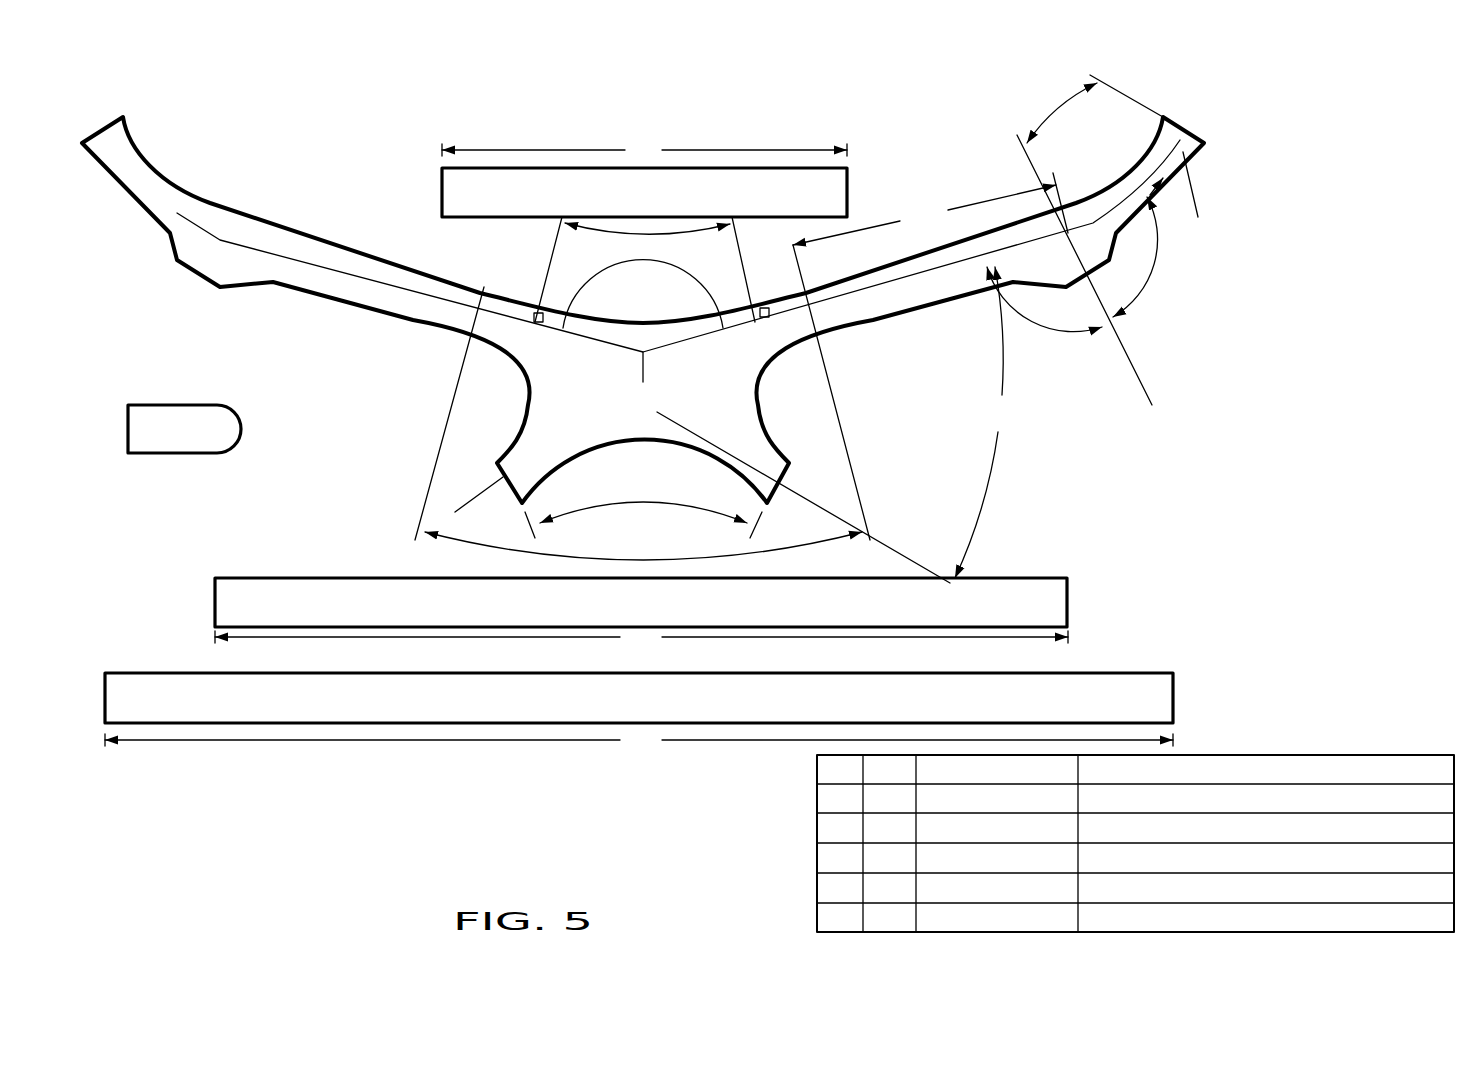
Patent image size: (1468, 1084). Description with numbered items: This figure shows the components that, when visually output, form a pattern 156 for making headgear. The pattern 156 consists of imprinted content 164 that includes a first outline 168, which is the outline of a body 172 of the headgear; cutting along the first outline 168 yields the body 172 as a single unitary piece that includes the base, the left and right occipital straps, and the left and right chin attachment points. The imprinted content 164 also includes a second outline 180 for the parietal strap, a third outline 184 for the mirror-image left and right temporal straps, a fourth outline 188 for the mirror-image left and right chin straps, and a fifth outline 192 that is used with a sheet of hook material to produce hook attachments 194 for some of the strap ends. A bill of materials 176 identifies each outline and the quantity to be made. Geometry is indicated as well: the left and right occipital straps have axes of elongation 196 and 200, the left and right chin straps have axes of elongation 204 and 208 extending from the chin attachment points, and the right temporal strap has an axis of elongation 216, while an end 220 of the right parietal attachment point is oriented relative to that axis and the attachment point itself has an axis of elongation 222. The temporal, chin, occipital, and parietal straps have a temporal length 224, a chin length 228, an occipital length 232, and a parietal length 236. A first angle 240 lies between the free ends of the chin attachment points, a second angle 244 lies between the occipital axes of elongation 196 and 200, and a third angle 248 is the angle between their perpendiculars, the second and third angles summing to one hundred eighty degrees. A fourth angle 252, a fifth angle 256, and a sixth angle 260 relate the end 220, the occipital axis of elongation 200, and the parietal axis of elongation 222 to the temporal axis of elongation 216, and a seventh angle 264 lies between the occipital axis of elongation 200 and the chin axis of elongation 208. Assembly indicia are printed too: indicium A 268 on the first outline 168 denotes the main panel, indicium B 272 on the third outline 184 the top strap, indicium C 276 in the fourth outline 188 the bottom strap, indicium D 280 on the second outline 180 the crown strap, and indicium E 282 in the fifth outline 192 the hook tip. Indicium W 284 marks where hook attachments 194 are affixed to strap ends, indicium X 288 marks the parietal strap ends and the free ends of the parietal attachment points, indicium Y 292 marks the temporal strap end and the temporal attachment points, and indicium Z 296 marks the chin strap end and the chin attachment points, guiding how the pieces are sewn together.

The pattern 156 is at (342, 172).
The imprinted content 164 is at (413, 172).
The first outline 168 is at (195, 195).
The body 172 is at (297, 238).
The bill of materials 176 is at (813, 787).
The second outline 180 is at (762, 167).
The third outline 184 is at (995, 577).
The fourth outline 188 is at (1067, 672).
The fifth outline 192 is at (202, 453).
The hook attachments 194 is at (167, 403).
The axis of elongation 196 is at (375, 280).
The axis of elongation 200 is at (877, 293).
The axis of elongation 204 is at (483, 492).
The axis of elongation 208 is at (730, 450).
The axis of elongation 216 is at (1123, 347).
The end 220 is at (1180, 120).
The axis of elongation 222 is at (1087, 229).
The temporal length 224 is at (762, 638).
The chin length 228 is at (716, 742).
The occipital length 232 is at (870, 230).
The parietal length 236 is at (563, 148).
The angle A1 240 is at (693, 505).
The angle A2 244 is at (583, 287).
The angle A3 248 is at (707, 230).
The angle A4 252 is at (1078, 110).
The angle A5 256 is at (1072, 332).
The angle A6 260 is at (1133, 300).
The angle A7 264 is at (985, 502).
The indicium A 268 is at (653, 397).
The indicium B 272 is at (540, 598).
The indicium C 276 is at (540, 697).
The indicium D 280 is at (562, 190).
The indicium E 282 is at (188, 423).
The indicium W 284 is at (150, 442).
The indicium X 288 is at (127, 140).
The indicium Y 292 is at (207, 267).
The indicium Z 296 is at (527, 457).